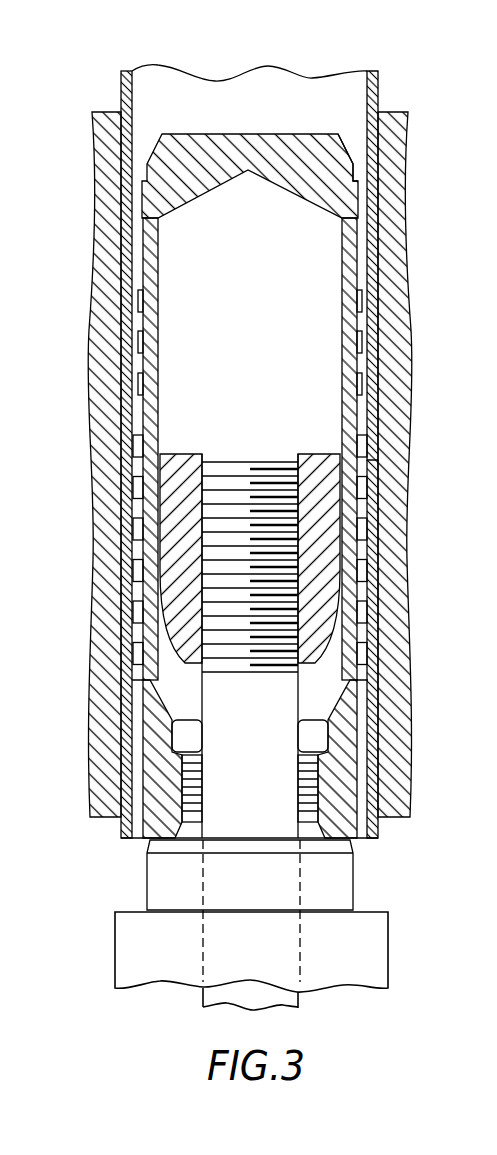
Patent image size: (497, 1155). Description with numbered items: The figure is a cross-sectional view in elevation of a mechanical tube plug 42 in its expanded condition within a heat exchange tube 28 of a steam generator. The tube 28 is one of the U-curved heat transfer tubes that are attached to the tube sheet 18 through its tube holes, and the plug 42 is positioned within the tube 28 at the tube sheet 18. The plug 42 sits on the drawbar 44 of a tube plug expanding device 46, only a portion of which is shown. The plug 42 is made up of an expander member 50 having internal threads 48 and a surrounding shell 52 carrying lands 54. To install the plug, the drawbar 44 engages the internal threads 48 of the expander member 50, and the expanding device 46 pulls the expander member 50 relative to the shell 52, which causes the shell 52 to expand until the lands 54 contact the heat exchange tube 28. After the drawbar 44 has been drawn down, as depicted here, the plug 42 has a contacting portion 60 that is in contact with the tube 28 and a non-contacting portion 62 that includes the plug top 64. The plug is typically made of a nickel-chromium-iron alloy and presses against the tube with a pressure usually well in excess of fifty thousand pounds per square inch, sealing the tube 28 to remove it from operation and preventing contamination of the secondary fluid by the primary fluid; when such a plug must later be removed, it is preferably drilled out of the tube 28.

The tube sheet 18 is at (98, 187).
The heat exchange tube 28 is at (357, 85).
The tube plug 42 is at (237, 136).
The drawbar 44 is at (260, 737).
The tube plug expanding device 46 is at (123, 942).
The internal threads 48 is at (210, 456).
The expander member 50 is at (320, 458).
The shell 52 is at (357, 326).
The lands 54 is at (368, 470).
The contacting portion 60 is at (362, 505).
The non-contacting portion 62 is at (357, 289).
The plug top 64 is at (320, 137).